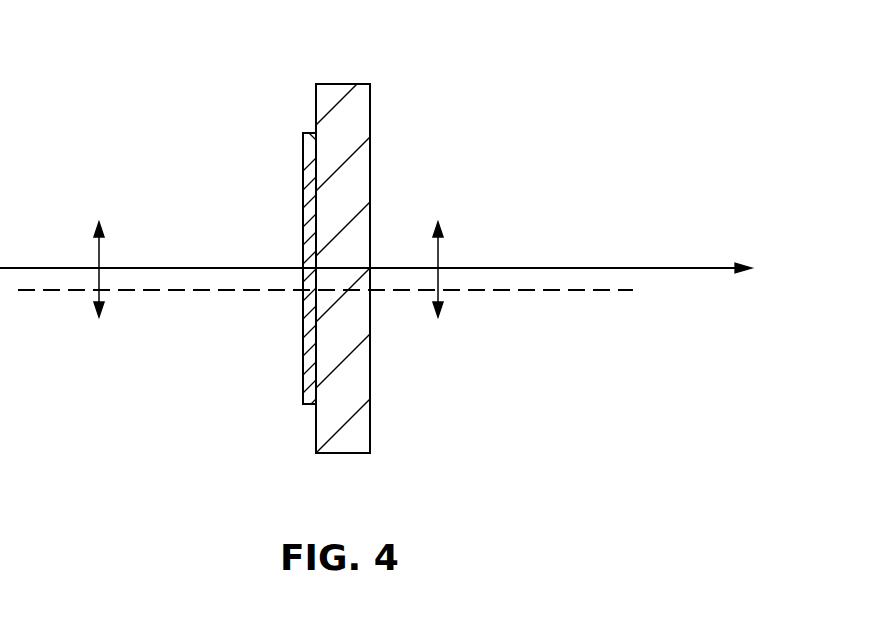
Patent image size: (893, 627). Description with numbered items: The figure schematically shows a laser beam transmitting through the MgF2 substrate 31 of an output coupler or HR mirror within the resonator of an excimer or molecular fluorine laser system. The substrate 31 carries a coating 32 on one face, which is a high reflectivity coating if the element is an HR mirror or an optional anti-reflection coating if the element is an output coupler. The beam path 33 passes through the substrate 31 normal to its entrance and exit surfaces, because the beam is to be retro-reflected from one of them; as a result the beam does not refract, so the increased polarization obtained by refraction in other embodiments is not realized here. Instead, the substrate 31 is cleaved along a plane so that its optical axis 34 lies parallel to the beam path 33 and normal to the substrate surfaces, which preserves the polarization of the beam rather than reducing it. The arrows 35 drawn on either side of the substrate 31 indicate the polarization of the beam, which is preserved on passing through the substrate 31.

The quarter-wave plate 31 is at (341, 93).
The polarizing film 32 is at (308, 183).
The light beam / propagation direction 33 is at (633, 256).
The optical axis 34 is at (524, 294).
The polarization direction arrows 35 is at (268, 283).